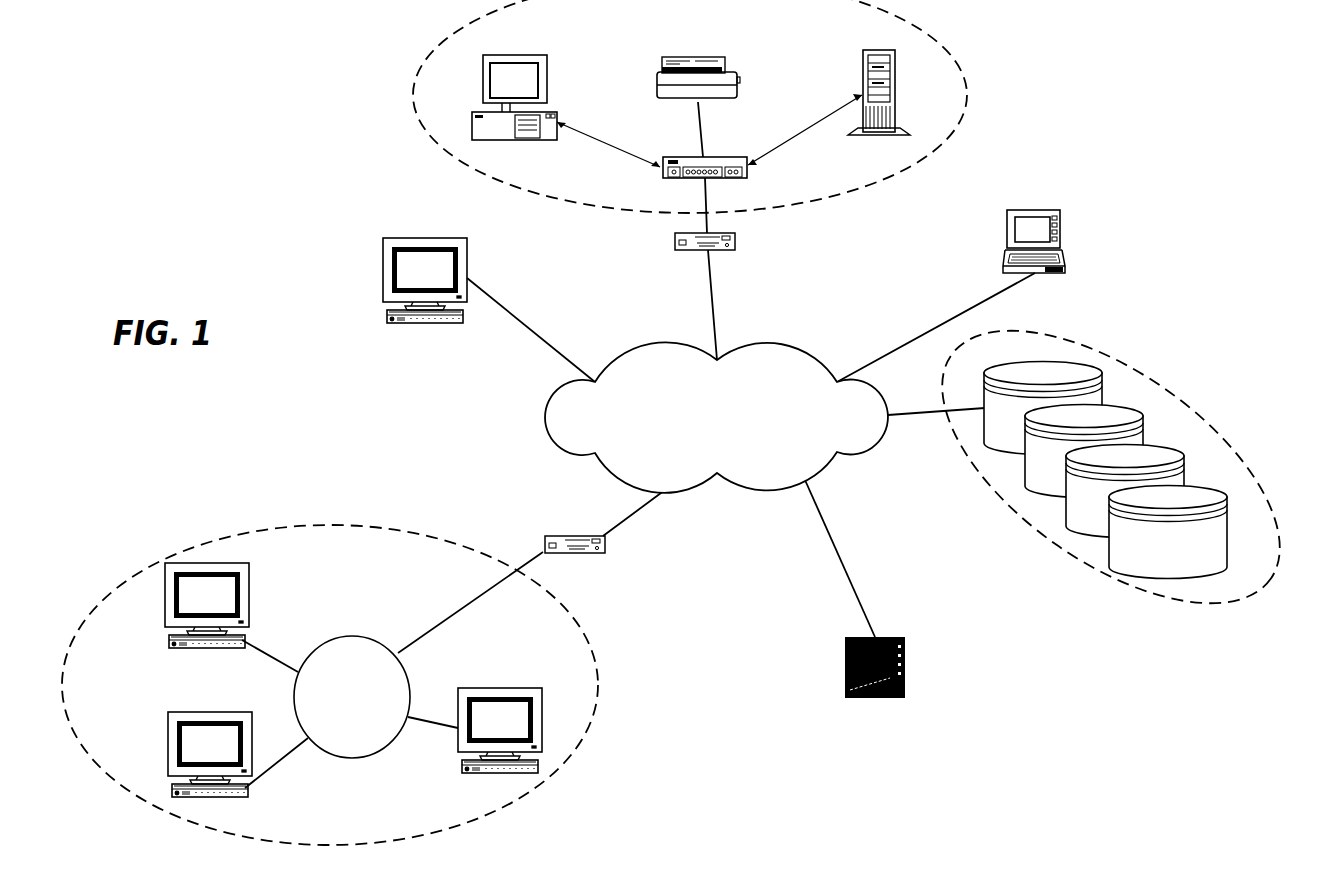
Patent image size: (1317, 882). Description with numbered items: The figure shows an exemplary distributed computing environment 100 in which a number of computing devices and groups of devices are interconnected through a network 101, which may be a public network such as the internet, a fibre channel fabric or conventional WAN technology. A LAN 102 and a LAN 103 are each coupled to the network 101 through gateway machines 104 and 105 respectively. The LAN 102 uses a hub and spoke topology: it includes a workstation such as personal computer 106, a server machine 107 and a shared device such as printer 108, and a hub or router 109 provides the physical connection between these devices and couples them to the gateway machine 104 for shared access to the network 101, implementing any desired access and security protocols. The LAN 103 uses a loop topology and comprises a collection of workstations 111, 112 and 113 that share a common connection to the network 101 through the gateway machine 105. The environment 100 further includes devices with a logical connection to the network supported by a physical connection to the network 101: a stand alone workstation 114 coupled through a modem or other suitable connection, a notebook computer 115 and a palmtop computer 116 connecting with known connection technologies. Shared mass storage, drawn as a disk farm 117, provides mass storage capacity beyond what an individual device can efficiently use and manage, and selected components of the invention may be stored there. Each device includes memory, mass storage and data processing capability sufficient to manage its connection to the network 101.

The computing environment 100 is at (271, 89).
The network 101 is at (563, 397).
The LAN 102 is at (430, 75).
The LAN 103 is at (347, 527).
The gateway machine 104 is at (687, 253).
The gateway machine 105 is at (558, 537).
The personal computer 106 is at (548, 55).
The server machine 107 is at (872, 55).
The printer 108 is at (698, 55).
The hub or router 109 is at (722, 150).
The workstation 111 is at (253, 580).
The workstation 112 is at (195, 710).
The workstation 113 is at (500, 688).
The stand alone workstation 114 is at (400, 245).
The notebook computer 115 is at (1033, 210).
The palmtop computer 116 is at (850, 638).
The database storage 117 is at (1102, 346).